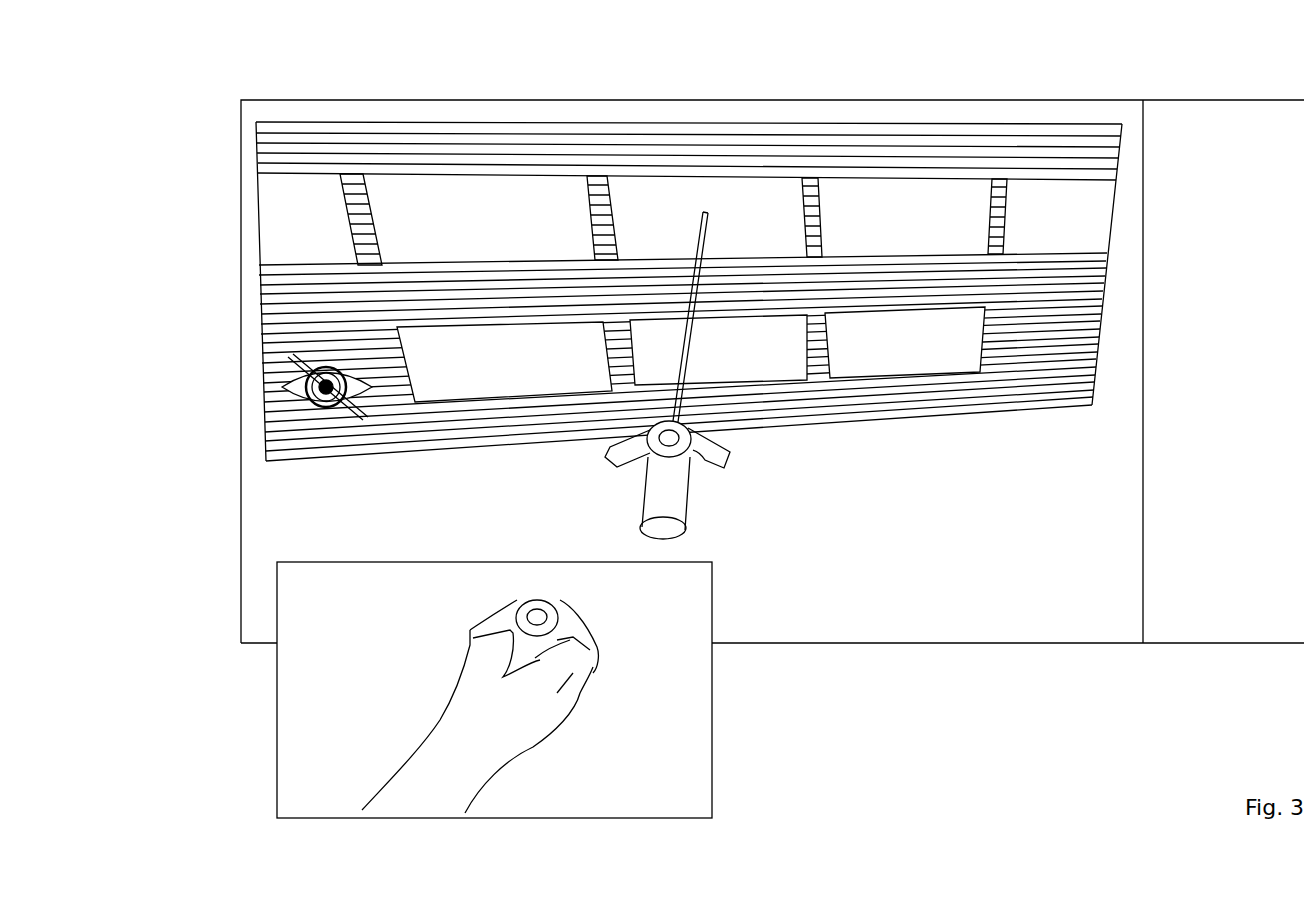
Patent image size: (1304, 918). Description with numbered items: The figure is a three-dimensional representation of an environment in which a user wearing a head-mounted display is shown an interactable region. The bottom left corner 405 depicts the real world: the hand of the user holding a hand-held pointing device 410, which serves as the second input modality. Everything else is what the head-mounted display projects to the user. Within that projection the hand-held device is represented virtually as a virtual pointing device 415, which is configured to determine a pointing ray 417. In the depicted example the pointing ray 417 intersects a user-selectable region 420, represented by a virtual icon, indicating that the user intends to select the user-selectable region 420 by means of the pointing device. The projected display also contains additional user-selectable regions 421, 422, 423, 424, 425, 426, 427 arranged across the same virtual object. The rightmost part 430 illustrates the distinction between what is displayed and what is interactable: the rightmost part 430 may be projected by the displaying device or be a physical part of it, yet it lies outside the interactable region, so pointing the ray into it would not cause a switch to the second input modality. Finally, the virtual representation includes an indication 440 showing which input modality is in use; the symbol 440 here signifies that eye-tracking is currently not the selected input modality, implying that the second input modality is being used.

The bottom left corner 405 is at (272, 733).
The hand-held pointing device 410 is at (540, 658).
The virtual pointing device 415 is at (700, 500).
The pointing ray 417 is at (693, 313).
The user-selectable region 420 is at (665, 288).
The additional user-selectable region 421 is at (487, 180).
The additional user-selectable region 422 is at (323, 173).
The additional user-selectable region 423 is at (920, 180).
The additional user-selectable region 424 is at (1047, 180).
The additional user-selectable region 425 is at (897, 377).
The additional user-selectable region 426 is at (783, 383).
The additional user-selectable region 427 is at (432, 403).
The rightmost part 430 is at (1205, 643).
The indication 440 is at (273, 387).